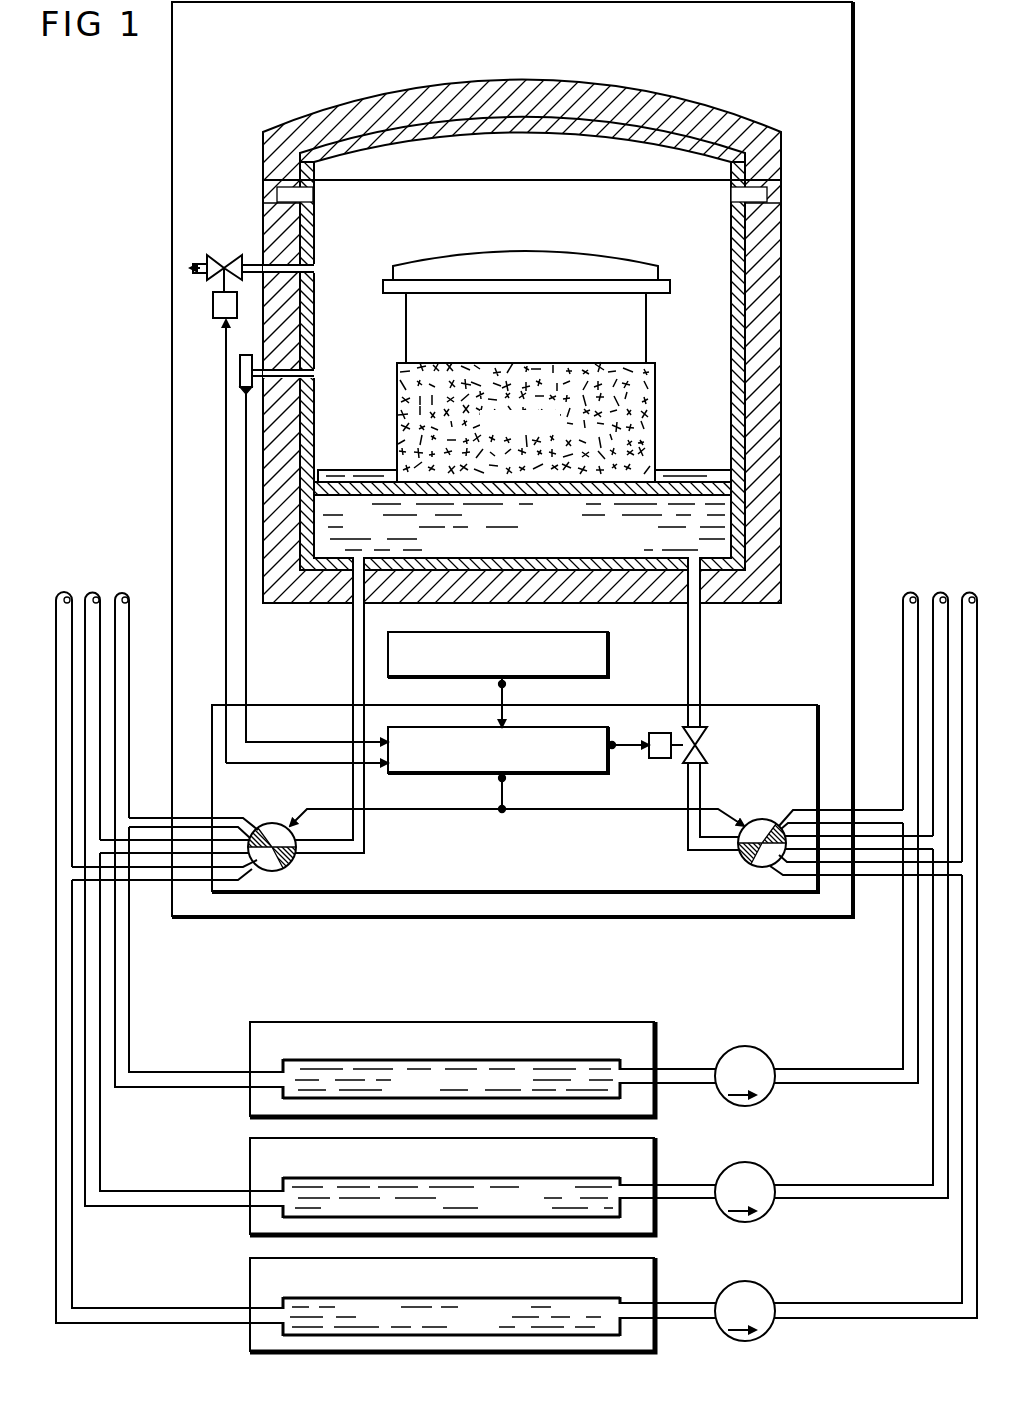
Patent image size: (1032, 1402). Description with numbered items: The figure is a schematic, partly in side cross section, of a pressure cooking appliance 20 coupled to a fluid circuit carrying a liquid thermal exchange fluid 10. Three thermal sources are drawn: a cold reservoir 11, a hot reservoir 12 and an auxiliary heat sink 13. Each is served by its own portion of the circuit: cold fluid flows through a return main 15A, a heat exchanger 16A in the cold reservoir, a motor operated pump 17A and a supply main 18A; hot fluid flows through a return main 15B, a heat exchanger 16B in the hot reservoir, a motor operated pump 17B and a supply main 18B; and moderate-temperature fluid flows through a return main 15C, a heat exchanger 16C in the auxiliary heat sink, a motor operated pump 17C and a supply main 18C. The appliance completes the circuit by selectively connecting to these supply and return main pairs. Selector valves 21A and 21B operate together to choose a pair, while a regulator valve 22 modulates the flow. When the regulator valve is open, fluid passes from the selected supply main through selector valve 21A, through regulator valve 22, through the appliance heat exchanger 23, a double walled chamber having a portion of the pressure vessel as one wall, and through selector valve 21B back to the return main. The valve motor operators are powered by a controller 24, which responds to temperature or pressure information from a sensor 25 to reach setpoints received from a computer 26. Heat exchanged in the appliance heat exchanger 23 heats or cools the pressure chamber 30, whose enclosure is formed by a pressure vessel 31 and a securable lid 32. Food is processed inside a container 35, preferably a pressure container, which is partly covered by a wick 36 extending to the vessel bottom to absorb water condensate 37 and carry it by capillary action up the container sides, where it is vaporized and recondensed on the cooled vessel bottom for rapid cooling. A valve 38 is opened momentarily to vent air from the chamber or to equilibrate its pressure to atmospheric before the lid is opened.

The thermal exchange fluid 10 is at (302, 1297).
The cold reservoir 11 is at (248, 1030).
The hot reservoir 12 is at (242, 1268).
The auxiliary heat sink 13 is at (244, 1148).
The return main 15A is at (129, 1050).
The return main 15B is at (72, 1285).
The return main 15C is at (100, 1166).
The heat exchanger 16A is at (596, 1062).
The heat exchanger 16B is at (596, 1298).
The heat exchanger 16C is at (602, 1179).
The motor operated pump 17A is at (724, 1055).
The motor operated pump 17B is at (724, 1290).
The motor operated pump 17C is at (724, 1171).
The supply main 18A is at (906, 1054).
The supply main 18B is at (964, 1289).
The supply main 18C is at (937, 1171).
The pressure cooking appliance 20 is at (804, 55).
The selector valve 21A is at (748, 862).
The selector valve 21B is at (288, 862).
The regulator valve 22 is at (707, 746).
The appliance heat exchanger 23 is at (676, 495).
The controller 24 is at (451, 793).
The sensor 25 is at (240, 374).
The computer 26 is at (620, 655).
The pressure chamber 30 is at (646, 214).
The pressure vessel 31 is at (314, 322).
The securable lid 32 is at (350, 150).
The container 35 is at (657, 328).
The wick 36 is at (661, 423).
The water condensate 37 is at (370, 476).
The valve 38 is at (242, 260).